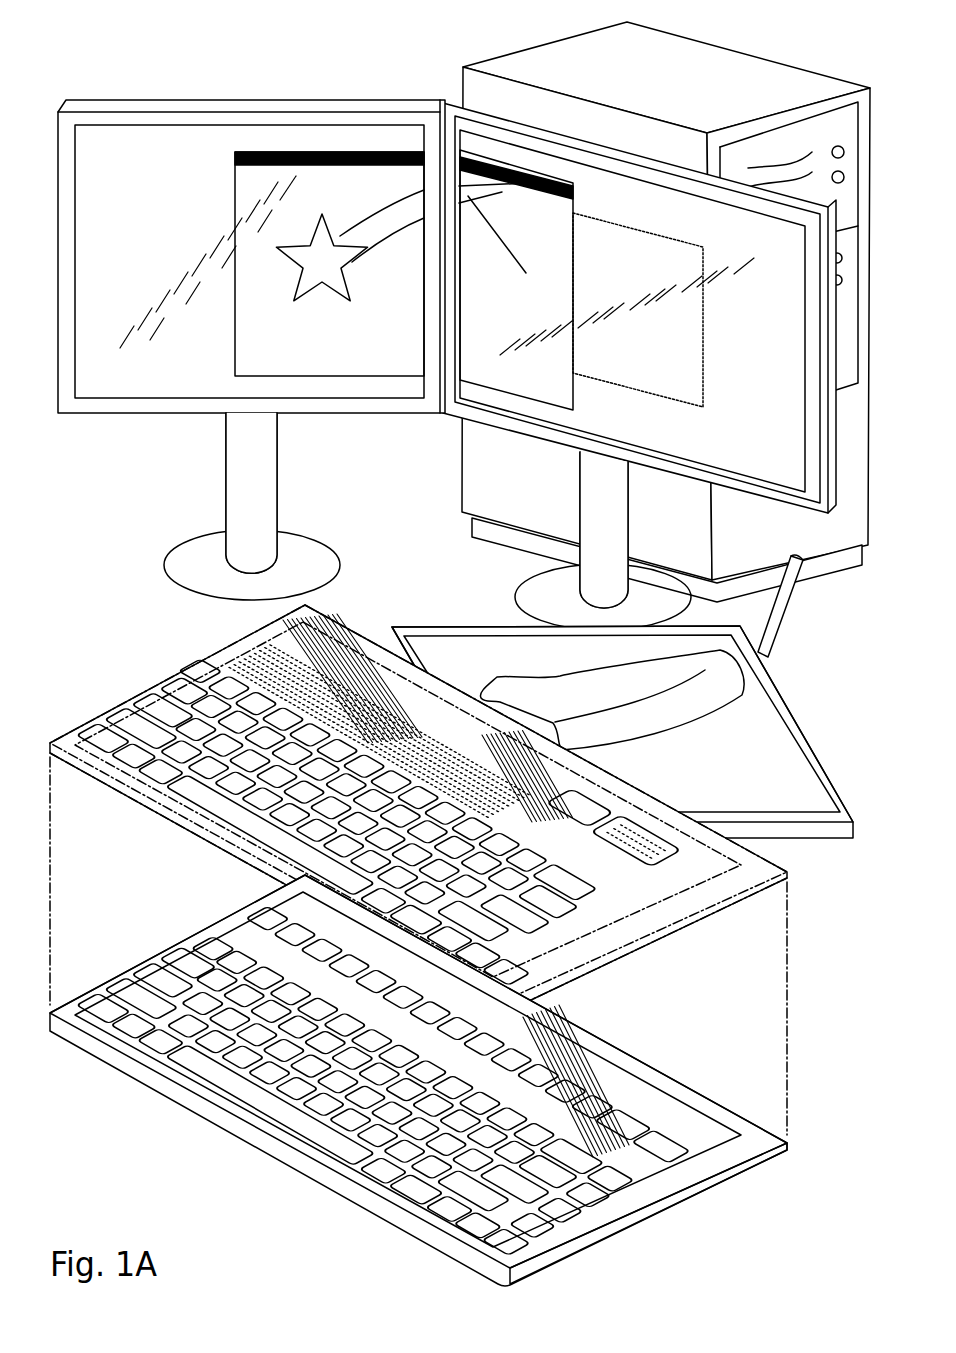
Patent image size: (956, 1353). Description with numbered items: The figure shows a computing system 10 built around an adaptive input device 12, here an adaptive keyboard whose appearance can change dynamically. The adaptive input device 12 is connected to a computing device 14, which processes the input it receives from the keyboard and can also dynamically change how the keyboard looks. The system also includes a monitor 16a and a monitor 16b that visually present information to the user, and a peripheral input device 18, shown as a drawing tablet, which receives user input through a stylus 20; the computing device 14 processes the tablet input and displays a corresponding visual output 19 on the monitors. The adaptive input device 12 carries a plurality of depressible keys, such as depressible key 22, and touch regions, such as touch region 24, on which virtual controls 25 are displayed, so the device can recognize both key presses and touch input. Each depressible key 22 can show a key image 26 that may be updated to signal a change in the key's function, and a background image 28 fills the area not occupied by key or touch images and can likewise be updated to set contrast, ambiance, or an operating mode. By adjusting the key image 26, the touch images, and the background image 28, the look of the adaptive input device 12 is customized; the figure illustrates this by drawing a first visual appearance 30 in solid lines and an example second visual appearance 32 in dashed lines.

The computing system 10 is at (460, 650).
The adaptive input device 12 is at (418, 1080).
The computing device 14 is at (666, 312).
The monitor 16a is at (251, 332).
The monitor 16b is at (639, 366).
The peripheral input device 18 is at (622, 732).
The visual output 19 is at (307, 264).
The stylus 20 is at (795, 606).
The depressible key 22 is at (217, 980).
The touch region 24 is at (408, 1069).
The virtual controls 25 is at (570, 1094).
The key image 26 is at (216, 980).
The background image 28 is at (648, 1213).
The first visual appearance 30 is at (418, 1080).
The second visual appearance 32 is at (418, 807).